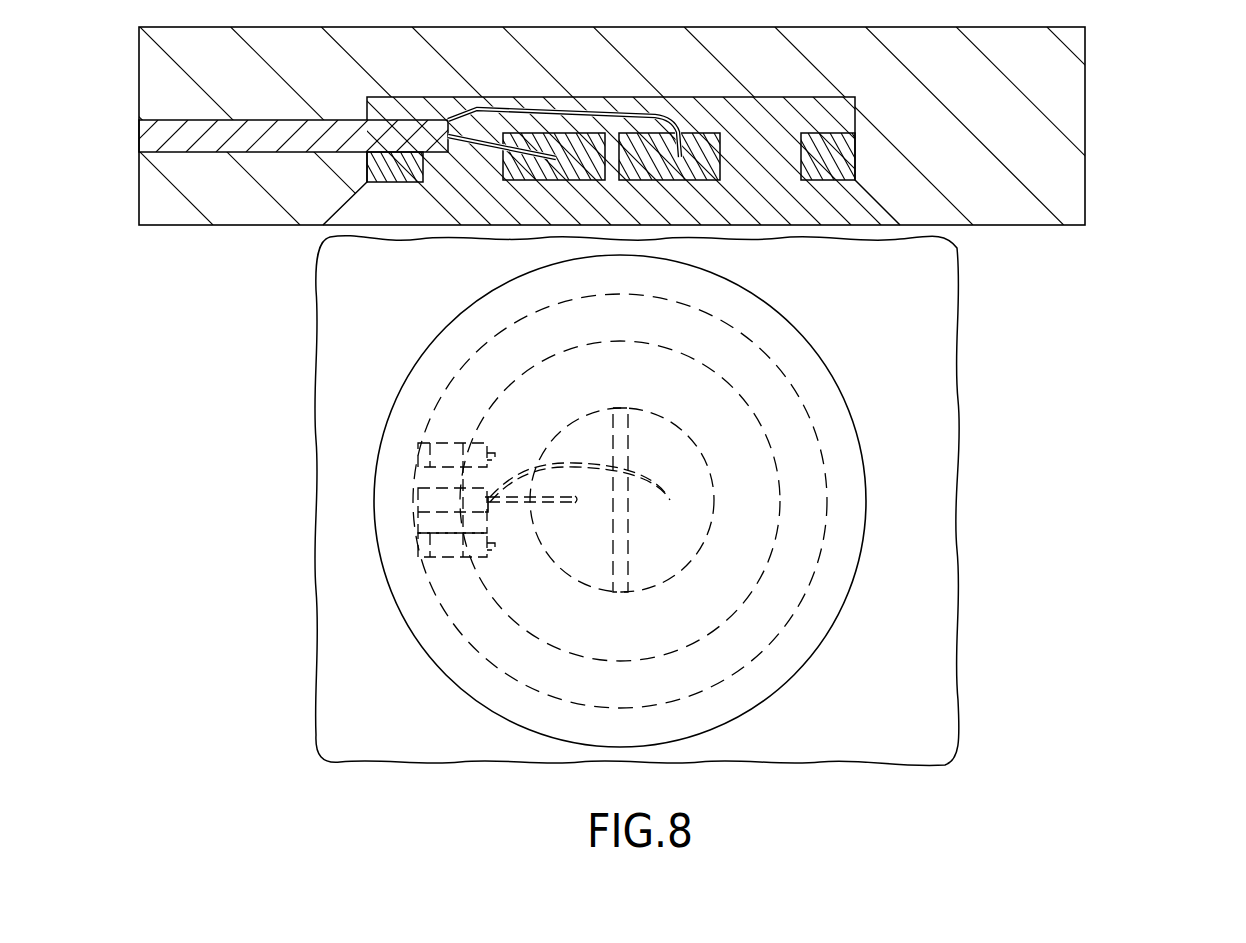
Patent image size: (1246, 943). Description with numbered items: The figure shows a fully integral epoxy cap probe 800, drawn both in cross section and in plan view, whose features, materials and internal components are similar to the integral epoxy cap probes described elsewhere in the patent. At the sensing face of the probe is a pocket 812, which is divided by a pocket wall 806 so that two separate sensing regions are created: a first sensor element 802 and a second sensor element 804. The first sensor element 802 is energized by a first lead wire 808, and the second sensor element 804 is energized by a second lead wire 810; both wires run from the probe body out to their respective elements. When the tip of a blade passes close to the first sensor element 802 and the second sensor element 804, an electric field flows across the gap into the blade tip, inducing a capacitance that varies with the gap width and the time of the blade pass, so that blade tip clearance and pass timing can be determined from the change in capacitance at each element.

The fully integral epoxy cap probe 800 is at (1150, 118).
The first sensor element 802 is at (708, 172).
The second sensor element 804 is at (562, 175).
The pocket wall 806 is at (621, 410).
The first lead wire 808 is at (489, 109).
The second lead wire 810 is at (481, 143).
The pocket 812 is at (696, 447).